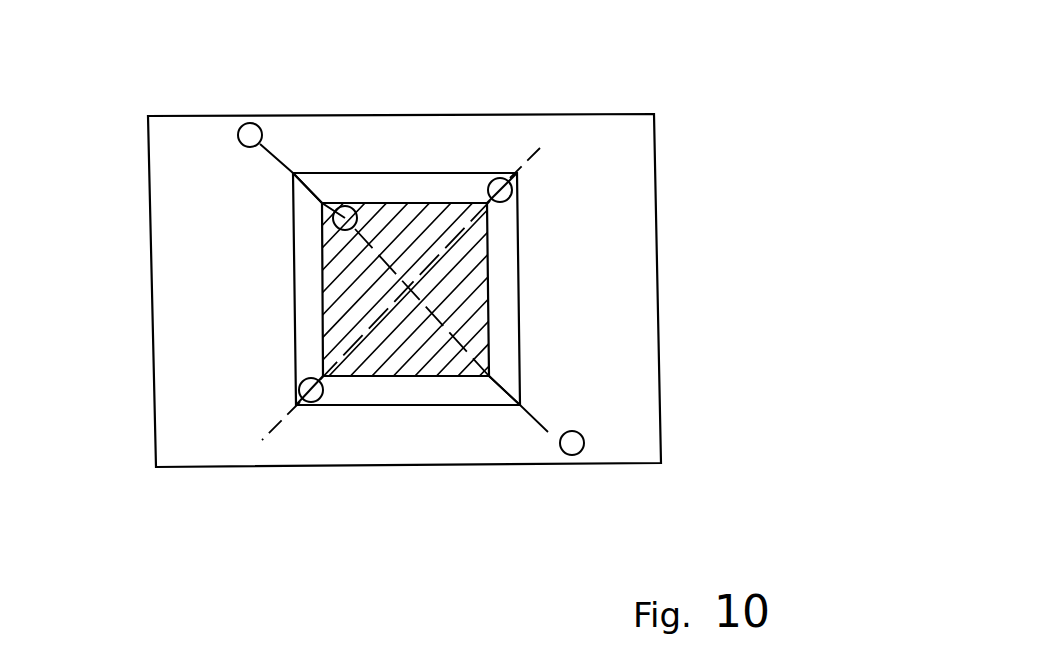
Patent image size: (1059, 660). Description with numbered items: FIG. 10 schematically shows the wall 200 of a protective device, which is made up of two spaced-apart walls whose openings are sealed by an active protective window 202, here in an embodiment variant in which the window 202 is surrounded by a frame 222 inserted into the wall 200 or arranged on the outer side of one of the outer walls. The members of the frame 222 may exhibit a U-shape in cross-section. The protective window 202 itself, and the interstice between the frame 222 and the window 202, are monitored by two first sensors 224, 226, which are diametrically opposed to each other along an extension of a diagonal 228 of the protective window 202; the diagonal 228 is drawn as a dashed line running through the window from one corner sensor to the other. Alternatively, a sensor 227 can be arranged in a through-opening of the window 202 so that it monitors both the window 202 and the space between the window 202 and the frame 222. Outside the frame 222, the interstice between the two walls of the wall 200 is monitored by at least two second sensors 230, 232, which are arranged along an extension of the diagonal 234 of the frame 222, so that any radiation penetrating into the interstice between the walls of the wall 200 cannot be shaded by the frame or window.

The wall 200 is at (615, 147).
The active window 202 is at (453, 275).
The frame 222 is at (503, 350).
The first sensor 224 is at (512, 204).
The first sensor 226 is at (299, 393).
The sensor 227 is at (347, 206).
The diagonal of the protective window 228 is at (281, 428).
The second sensor 230 is at (237, 137).
The second sensor 232 is at (584, 443).
The diagonal of the frame 234 is at (278, 154).